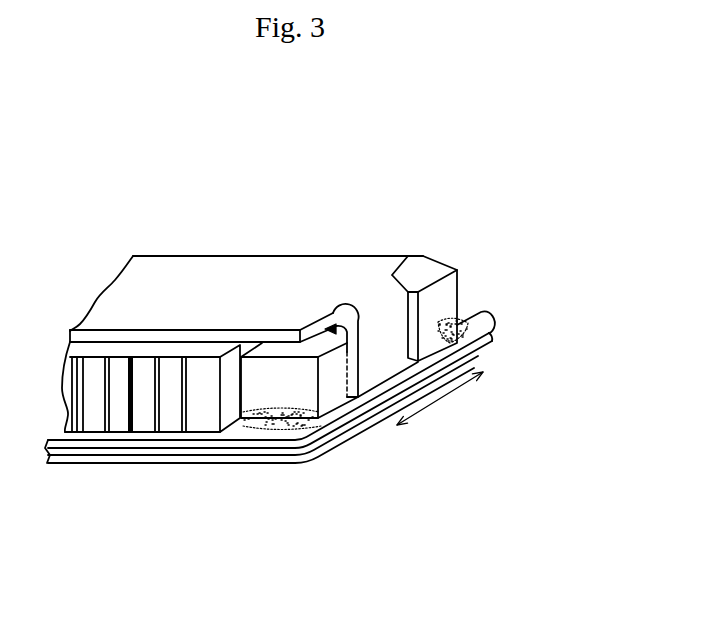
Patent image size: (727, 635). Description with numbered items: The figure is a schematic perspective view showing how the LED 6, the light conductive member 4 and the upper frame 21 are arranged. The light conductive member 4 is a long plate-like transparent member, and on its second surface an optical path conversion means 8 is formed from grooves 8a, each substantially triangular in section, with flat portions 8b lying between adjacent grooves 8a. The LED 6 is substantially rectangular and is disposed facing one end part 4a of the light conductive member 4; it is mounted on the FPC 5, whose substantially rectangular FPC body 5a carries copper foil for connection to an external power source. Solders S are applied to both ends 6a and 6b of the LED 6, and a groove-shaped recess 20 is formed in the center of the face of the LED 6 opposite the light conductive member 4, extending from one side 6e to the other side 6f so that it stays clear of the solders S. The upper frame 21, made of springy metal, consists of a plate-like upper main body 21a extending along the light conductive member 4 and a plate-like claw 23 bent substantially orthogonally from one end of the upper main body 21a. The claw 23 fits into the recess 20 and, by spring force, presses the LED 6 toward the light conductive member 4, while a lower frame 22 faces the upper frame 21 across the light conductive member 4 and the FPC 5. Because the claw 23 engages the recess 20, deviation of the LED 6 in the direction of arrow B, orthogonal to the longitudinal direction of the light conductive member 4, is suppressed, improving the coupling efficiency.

The upper frame 21 is at (372, 172).
The upper main body 21a is at (236, 284).
The claw 23 is at (388, 325).
The optical path conversion means 8 is at (163, 545).
The grooves 8a is at (108, 418).
The flat portions 8b is at (91, 413).
The light conductive member 4 is at (204, 414).
The one end part of the light conductive member 4a is at (229, 413).
The LED 6 is at (470, 262).
The one side of the LED 6e is at (433, 275).
The end of the LED 6a is at (480, 338).
The other side of the LED 6f is at (343, 408).
The end of the LED 6b is at (325, 433).
The FPC 5 is at (339, 398).
The FPC body 5a is at (480, 348).
The lower frame 22 is at (262, 460).
The recess 20 is at (417, 317).
The solders S is at (480, 313).
The arrow B is at (440, 402).